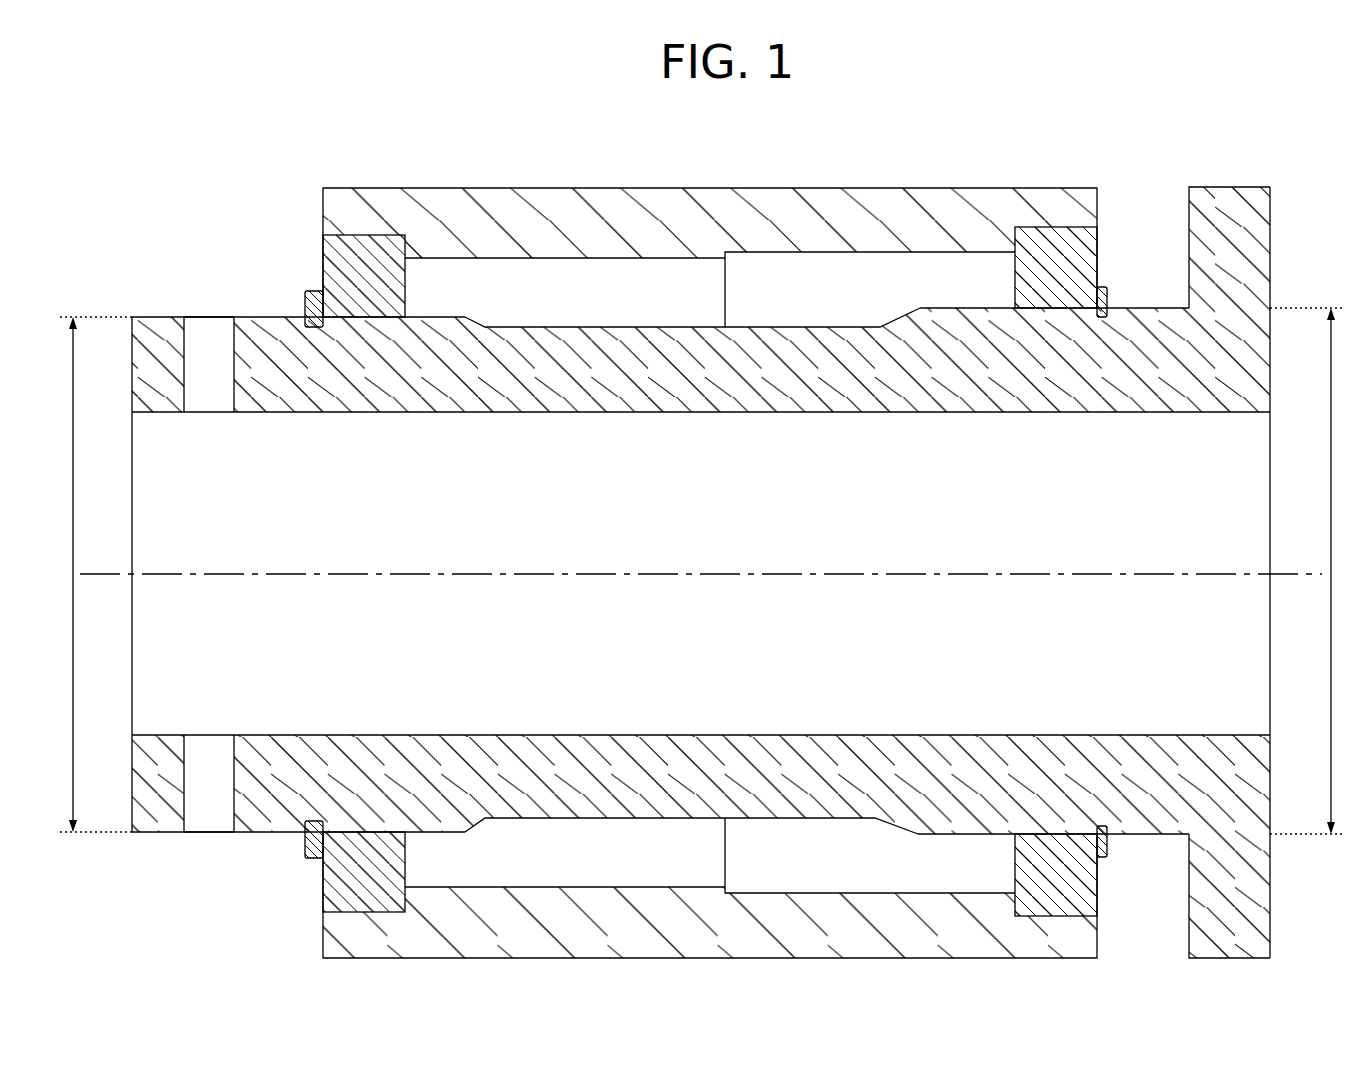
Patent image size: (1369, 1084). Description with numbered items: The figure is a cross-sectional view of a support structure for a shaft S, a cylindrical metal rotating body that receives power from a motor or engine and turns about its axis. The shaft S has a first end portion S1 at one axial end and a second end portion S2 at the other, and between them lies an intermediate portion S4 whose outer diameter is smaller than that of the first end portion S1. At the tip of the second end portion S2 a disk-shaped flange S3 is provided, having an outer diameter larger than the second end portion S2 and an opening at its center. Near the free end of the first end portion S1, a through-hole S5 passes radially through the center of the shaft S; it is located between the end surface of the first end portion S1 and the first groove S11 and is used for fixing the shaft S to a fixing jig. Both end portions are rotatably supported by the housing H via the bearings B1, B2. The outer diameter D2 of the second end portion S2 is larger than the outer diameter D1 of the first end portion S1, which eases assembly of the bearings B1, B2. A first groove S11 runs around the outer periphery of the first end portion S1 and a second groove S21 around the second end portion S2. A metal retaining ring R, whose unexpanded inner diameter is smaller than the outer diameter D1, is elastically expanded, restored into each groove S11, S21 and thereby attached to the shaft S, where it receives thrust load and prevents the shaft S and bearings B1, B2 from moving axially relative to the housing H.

The shaft S is at (685, 541).
The through-hole S5 is at (205, 312).
The first groove S11 is at (306, 317).
The first end portion S1 is at (438, 316).
The intermediate portion S4 is at (598, 327).
The second end portion S2 is at (960, 308).
The second groove S21 is at (1109, 303).
The flange S3 is at (1233, 187).
The housing H is at (775, 188).
The bearing B1 is at (370, 250).
The bearing B2 is at (1053, 250).
The retaining ring R is at (309, 290).
The outer diameter of the first end portion D1 is at (82, 574).
The outer diameter of the second end portion D2 is at (1319, 571).